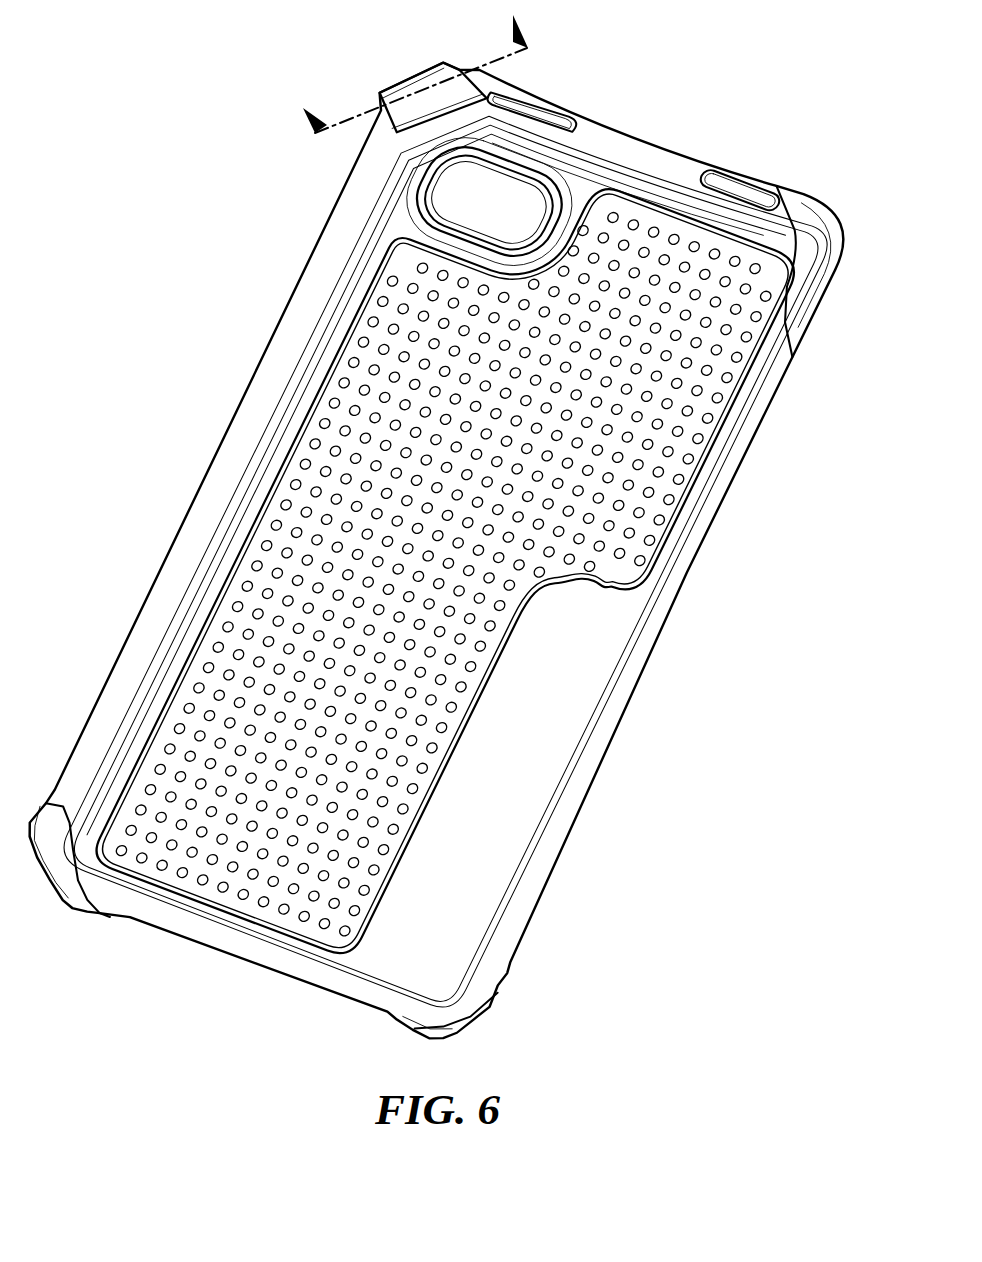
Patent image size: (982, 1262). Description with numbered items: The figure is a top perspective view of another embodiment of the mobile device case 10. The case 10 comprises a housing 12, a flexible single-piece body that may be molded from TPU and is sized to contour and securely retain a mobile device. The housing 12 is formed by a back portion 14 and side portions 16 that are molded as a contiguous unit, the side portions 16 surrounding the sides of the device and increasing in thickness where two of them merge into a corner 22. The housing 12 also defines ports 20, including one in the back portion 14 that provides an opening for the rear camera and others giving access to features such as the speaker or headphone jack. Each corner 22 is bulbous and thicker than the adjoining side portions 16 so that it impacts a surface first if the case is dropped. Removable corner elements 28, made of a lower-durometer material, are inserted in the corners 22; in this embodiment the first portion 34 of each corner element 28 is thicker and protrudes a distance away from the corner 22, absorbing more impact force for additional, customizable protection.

The mobile device case 10 is at (236, 74).
The housing 12 is at (723, 492).
The back portion 14 is at (358, 738).
The side portions 16 is at (162, 603).
The ports 20 is at (458, 190).
The corners 22 is at (378, 145).
The corner elements 28 is at (797, 195).
The first portion 34 is at (482, 1022).